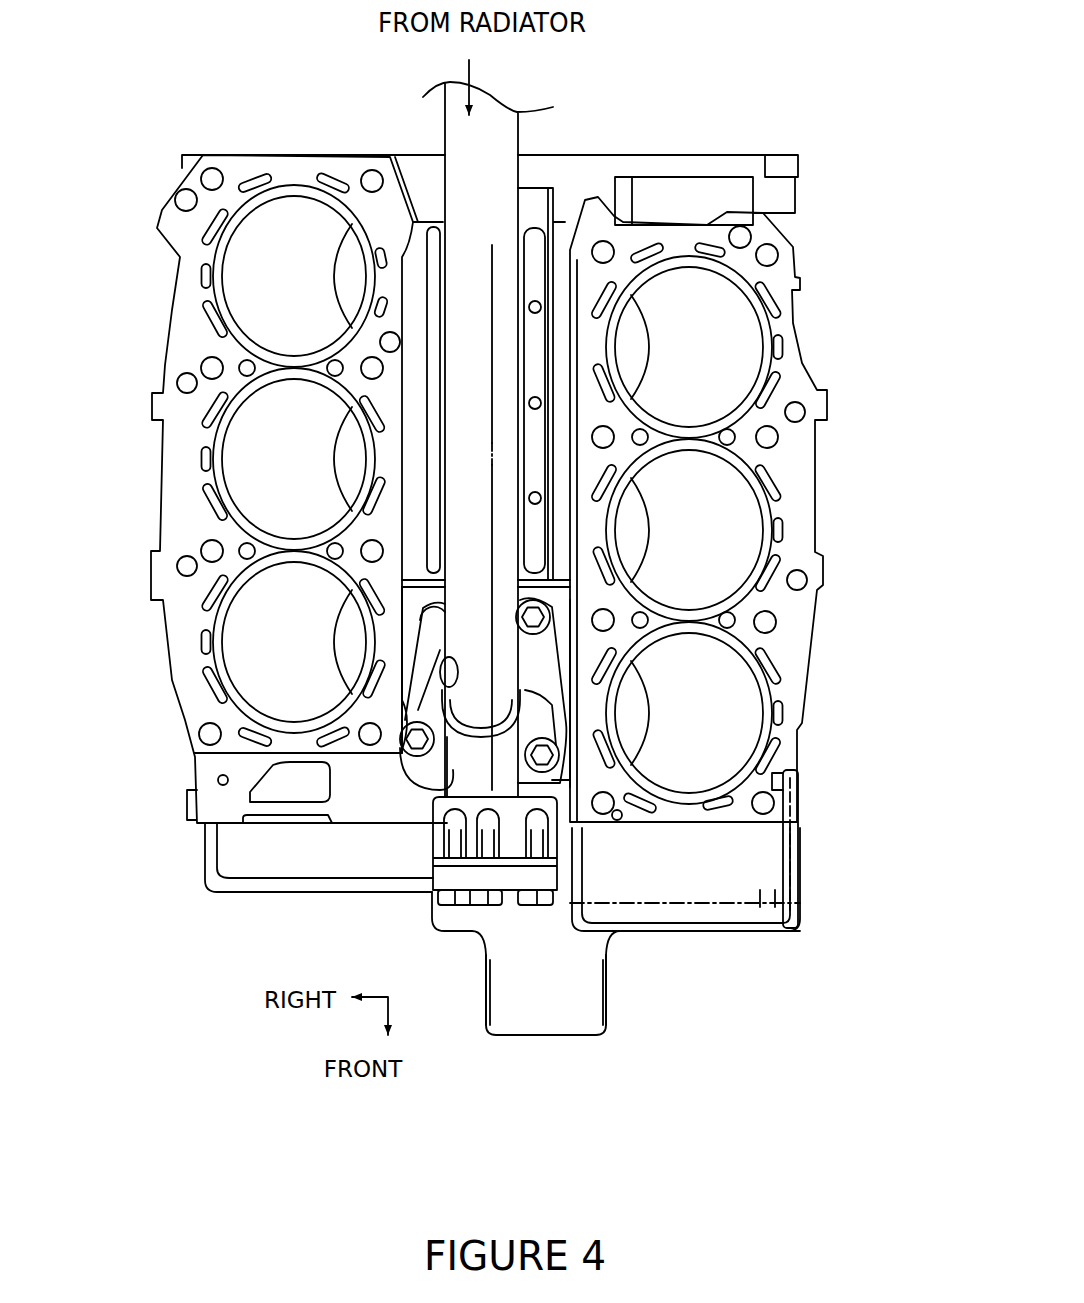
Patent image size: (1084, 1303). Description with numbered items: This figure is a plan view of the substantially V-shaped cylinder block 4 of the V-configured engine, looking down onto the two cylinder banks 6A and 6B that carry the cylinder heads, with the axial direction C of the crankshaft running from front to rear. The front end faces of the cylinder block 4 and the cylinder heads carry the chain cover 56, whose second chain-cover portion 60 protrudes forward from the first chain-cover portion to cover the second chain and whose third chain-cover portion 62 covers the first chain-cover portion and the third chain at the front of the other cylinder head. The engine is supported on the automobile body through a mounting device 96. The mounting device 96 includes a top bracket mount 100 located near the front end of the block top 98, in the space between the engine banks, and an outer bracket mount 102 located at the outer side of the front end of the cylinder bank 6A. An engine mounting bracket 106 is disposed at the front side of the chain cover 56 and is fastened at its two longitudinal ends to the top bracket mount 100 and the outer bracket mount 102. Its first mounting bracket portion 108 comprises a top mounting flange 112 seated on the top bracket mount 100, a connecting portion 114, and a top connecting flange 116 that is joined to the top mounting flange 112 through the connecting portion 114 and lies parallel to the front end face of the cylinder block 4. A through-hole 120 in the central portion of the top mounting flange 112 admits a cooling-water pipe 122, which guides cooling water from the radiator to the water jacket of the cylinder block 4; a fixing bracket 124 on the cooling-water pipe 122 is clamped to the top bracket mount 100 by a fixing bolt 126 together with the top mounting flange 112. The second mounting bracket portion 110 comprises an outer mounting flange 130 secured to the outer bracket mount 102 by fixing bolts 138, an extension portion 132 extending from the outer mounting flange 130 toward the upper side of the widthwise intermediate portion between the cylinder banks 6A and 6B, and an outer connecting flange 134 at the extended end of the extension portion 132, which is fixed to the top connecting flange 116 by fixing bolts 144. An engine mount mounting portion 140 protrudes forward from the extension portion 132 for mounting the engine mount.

The cylinder block 4 is at (157, 527).
The cylinder bank 6A is at (787, 747).
The cylinder bank 6B is at (232, 795).
The chain cover 56 is at (192, 886).
The second chain-cover portion 60 is at (753, 938).
The third chain-cover portion 62 is at (242, 893).
The mounting device 96 is at (452, 1093).
The block top 98 is at (413, 548).
The top bracket mount 100 is at (413, 630).
The outer bracket mount 102 is at (798, 802).
The engine mounting bracket 106 is at (575, 1065).
The first mounting bracket portion 108 is at (558, 658).
The second mounting bracket portion 110 is at (612, 1006).
The top mounting flange 112 is at (552, 693).
The connecting portion 114 is at (453, 768).
The top connecting flange 116 is at (438, 845).
The through-hole 120 is at (452, 665).
The cooling-water pipe 122 is at (503, 145).
The fixing bracket 124 is at (428, 700).
The fixing bolt 126 is at (555, 612).
The outer mounting flange 130 is at (798, 857).
The extension portion 132 is at (538, 915).
The outer connecting flange 134 is at (510, 903).
The fixing bolts 138 is at (800, 900).
The engine mount mounting portion 140 is at (585, 1013).
The fixing bolts 144 is at (540, 905).
The axial direction C is at (493, 358).